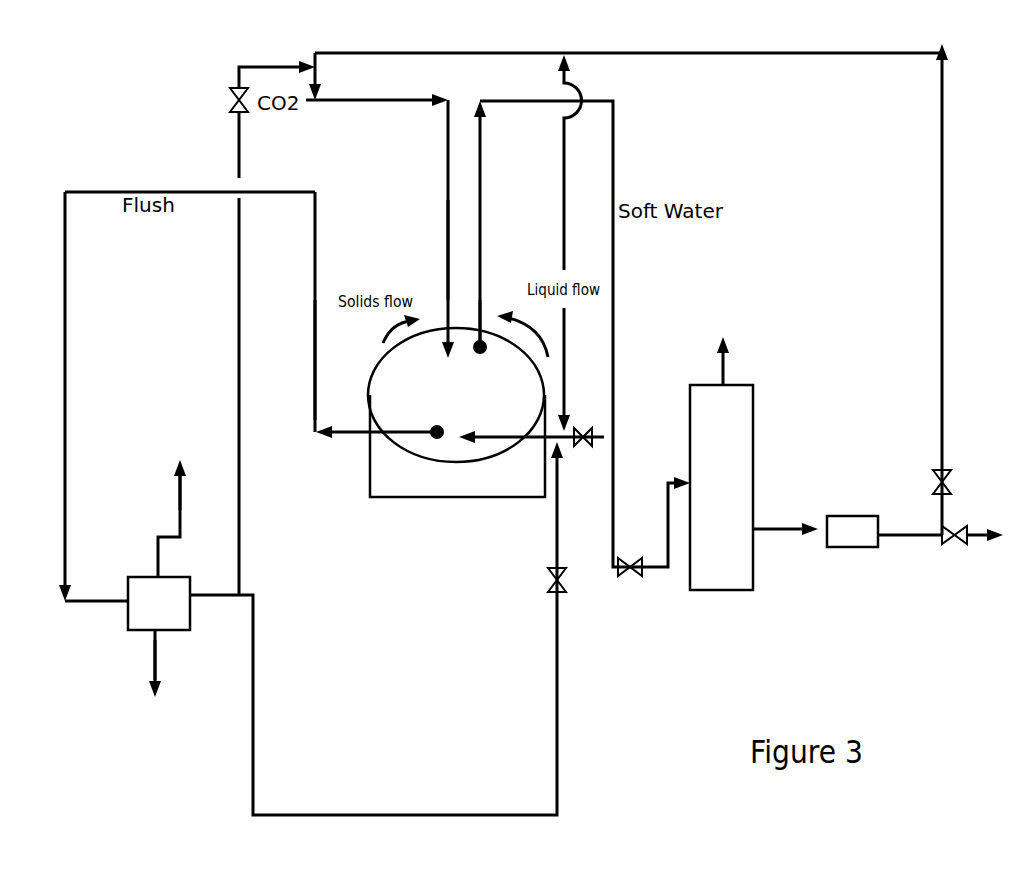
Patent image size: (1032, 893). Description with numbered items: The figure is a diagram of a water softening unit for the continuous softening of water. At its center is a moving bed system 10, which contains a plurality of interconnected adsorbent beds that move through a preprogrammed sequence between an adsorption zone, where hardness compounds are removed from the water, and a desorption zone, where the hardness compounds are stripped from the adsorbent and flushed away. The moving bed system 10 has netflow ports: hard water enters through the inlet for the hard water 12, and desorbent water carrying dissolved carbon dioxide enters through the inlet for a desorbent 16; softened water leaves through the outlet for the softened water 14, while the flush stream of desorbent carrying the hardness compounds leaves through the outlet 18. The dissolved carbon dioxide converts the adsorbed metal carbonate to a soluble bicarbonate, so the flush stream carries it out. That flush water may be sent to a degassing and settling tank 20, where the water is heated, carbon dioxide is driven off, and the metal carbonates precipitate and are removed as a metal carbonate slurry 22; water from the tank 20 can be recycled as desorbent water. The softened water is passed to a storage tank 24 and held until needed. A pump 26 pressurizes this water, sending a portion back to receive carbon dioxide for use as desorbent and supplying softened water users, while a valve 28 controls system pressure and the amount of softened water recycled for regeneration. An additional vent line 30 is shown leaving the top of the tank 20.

The moving bed system 10 is at (370, 468).
The inlet for the hard water 12 is at (604, 437).
The outlet for the softened water 14 is at (481, 300).
The inlet for a desorbent 16 is at (448, 225).
The outlet for the desorbent carrying the hardness compounds 18 is at (315, 378).
The degassing and settling tank 20 is at (138, 577).
The metal carbonate slurry 22 is at (155, 657).
The storage tank 24 is at (753, 430).
The pump 26 is at (850, 512).
The valve 28 is at (957, 540).
The gas vent outlet 30 is at (182, 497).